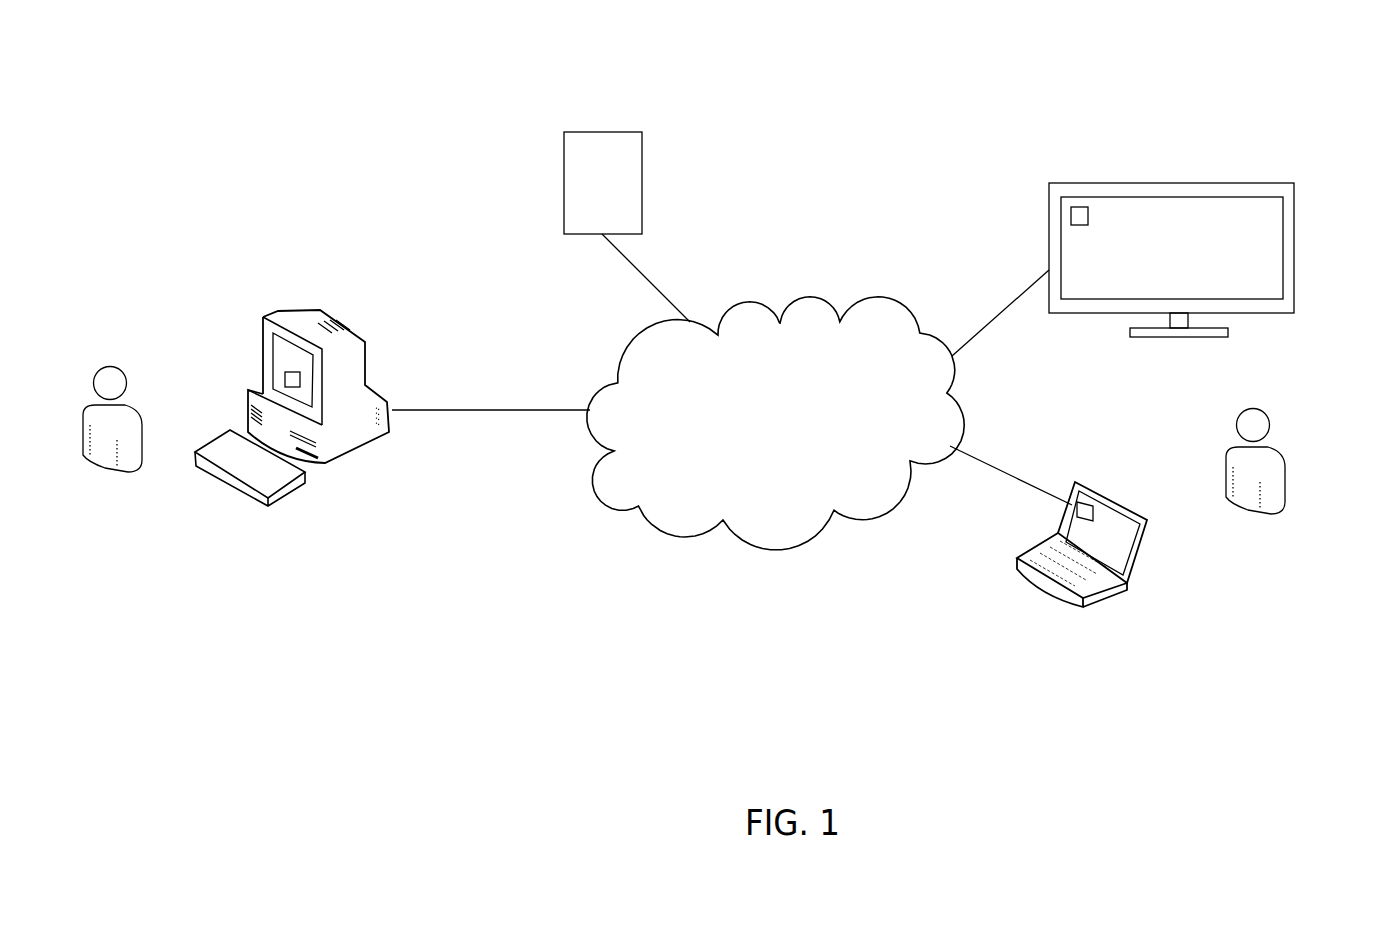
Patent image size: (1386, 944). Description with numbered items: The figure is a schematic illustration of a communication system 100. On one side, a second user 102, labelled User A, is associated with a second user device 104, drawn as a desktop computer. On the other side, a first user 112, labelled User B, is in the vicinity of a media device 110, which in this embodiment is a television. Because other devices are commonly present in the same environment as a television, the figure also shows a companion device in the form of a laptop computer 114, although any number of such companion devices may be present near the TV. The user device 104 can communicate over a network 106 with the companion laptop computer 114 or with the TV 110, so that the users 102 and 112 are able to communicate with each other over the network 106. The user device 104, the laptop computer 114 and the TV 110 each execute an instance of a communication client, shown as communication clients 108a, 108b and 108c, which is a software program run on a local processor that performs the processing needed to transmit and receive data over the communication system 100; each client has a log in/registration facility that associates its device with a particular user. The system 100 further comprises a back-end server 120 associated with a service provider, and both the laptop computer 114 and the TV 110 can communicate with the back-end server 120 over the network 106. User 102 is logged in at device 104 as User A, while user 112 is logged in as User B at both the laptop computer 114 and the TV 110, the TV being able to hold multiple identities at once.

The communication system 100 is at (262, 134).
The second user 102 is at (110, 367).
The second user device 104 is at (286, 420).
The network 106 is at (880, 303).
The communication client 108a is at (284, 386).
The communication client 108b is at (1070, 219).
The communication client 108c is at (1075, 513).
The media device 110 is at (1177, 260).
The first user 112 is at (1280, 462).
The laptop computer 114 is at (1062, 586).
The back-end server 120 is at (578, 182).